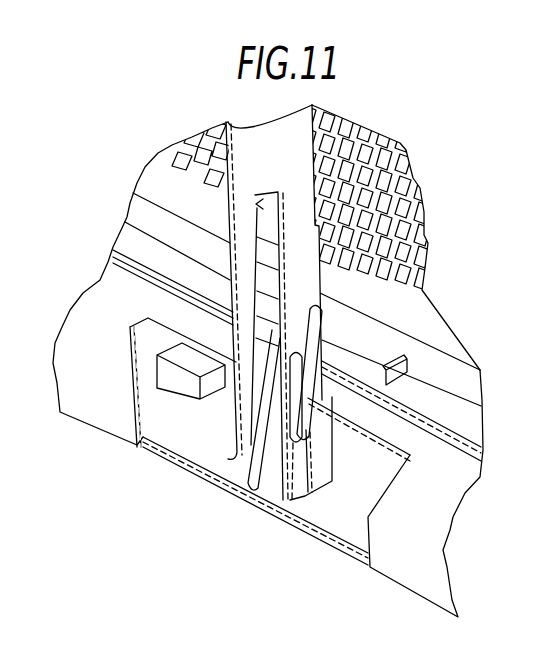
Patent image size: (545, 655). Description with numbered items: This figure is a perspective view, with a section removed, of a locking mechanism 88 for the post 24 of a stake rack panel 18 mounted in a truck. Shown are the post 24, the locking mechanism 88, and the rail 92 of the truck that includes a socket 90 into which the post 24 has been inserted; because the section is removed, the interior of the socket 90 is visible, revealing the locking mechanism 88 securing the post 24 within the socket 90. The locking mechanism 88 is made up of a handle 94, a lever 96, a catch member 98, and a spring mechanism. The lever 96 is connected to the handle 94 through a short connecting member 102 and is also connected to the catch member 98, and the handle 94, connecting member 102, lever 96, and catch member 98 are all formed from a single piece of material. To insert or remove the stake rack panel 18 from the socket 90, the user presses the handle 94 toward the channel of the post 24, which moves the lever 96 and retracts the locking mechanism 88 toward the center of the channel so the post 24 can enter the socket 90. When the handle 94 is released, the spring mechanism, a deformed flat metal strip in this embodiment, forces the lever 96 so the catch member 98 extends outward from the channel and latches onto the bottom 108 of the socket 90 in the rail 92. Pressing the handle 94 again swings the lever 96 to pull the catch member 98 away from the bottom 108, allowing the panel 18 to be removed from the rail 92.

The stake rack panel 18 is at (403, 200).
The post 24 is at (136, 142).
The locking mechanism 88 is at (149, 305).
The socket 90 is at (235, 422).
The rail 92 is at (427, 543).
The handle 94 is at (303, 352).
The lever 96 is at (252, 486).
The catch member 98 is at (235, 460).
The connecting member 102 is at (293, 462).
The bottom of socket 108 is at (308, 492).